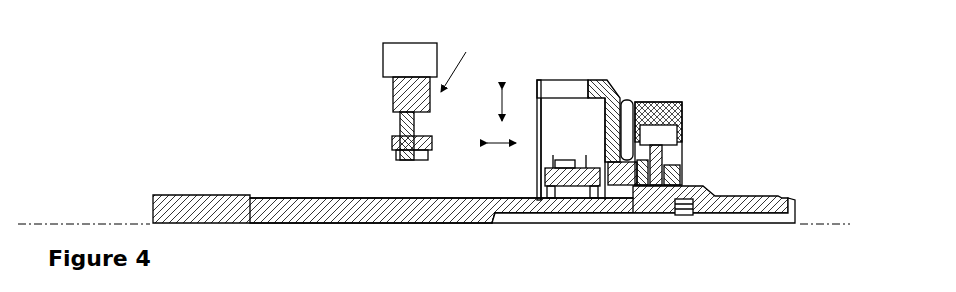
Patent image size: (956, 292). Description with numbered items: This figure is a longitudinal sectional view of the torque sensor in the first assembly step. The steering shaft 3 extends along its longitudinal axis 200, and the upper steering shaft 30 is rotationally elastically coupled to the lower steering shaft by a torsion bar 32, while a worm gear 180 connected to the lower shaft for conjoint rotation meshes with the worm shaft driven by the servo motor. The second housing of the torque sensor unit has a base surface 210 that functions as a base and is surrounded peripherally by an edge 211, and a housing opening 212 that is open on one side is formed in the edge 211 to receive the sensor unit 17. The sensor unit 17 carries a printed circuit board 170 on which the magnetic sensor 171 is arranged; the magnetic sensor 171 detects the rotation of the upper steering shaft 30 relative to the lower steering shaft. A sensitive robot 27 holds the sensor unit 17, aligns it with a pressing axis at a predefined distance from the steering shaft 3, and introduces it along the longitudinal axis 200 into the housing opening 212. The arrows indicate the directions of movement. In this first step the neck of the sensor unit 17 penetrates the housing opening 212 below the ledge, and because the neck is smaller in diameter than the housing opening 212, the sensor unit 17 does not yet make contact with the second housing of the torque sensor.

The steering shaft 3 is at (203, 210).
The sensor unit 17 is at (484, 49).
The sensitive robot 27 is at (409, 58).
The upper steering shaft 30 is at (285, 210).
The torsion bar 32 is at (730, 220).
The printed circuit board 170 is at (397, 128).
The magnetic sensor 171 is at (400, 141).
The worm gear 180 is at (665, 100).
The longitudinal axis 200 is at (104, 222).
The base surface 210 is at (605, 117).
The edge 211 is at (598, 82).
The housing opening 212 is at (558, 88).